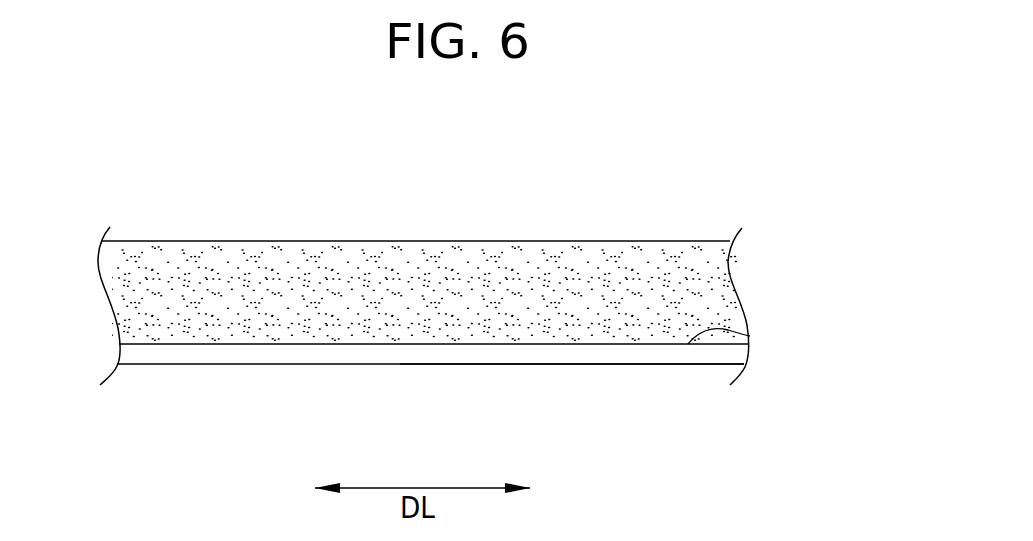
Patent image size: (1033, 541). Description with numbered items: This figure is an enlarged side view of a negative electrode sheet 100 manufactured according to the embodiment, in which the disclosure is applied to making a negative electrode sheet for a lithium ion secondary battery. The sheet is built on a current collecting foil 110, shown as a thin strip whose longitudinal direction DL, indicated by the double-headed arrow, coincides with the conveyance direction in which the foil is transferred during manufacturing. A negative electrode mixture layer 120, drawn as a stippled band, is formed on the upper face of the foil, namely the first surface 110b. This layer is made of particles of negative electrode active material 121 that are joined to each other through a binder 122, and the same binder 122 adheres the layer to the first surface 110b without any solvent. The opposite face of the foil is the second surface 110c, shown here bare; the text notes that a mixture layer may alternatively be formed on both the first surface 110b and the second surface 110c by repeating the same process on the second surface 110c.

The negative electrode sheet 100 is at (608, 186).
The negative electrode mixture layer 120 is at (420, 237).
The negative electrode active material 121 is at (425, 293).
The binder 122 is at (360, 265).
The current collecting foil 110 is at (483, 357).
The first surface 110b is at (750, 336).
The second surface 110c is at (573, 365).